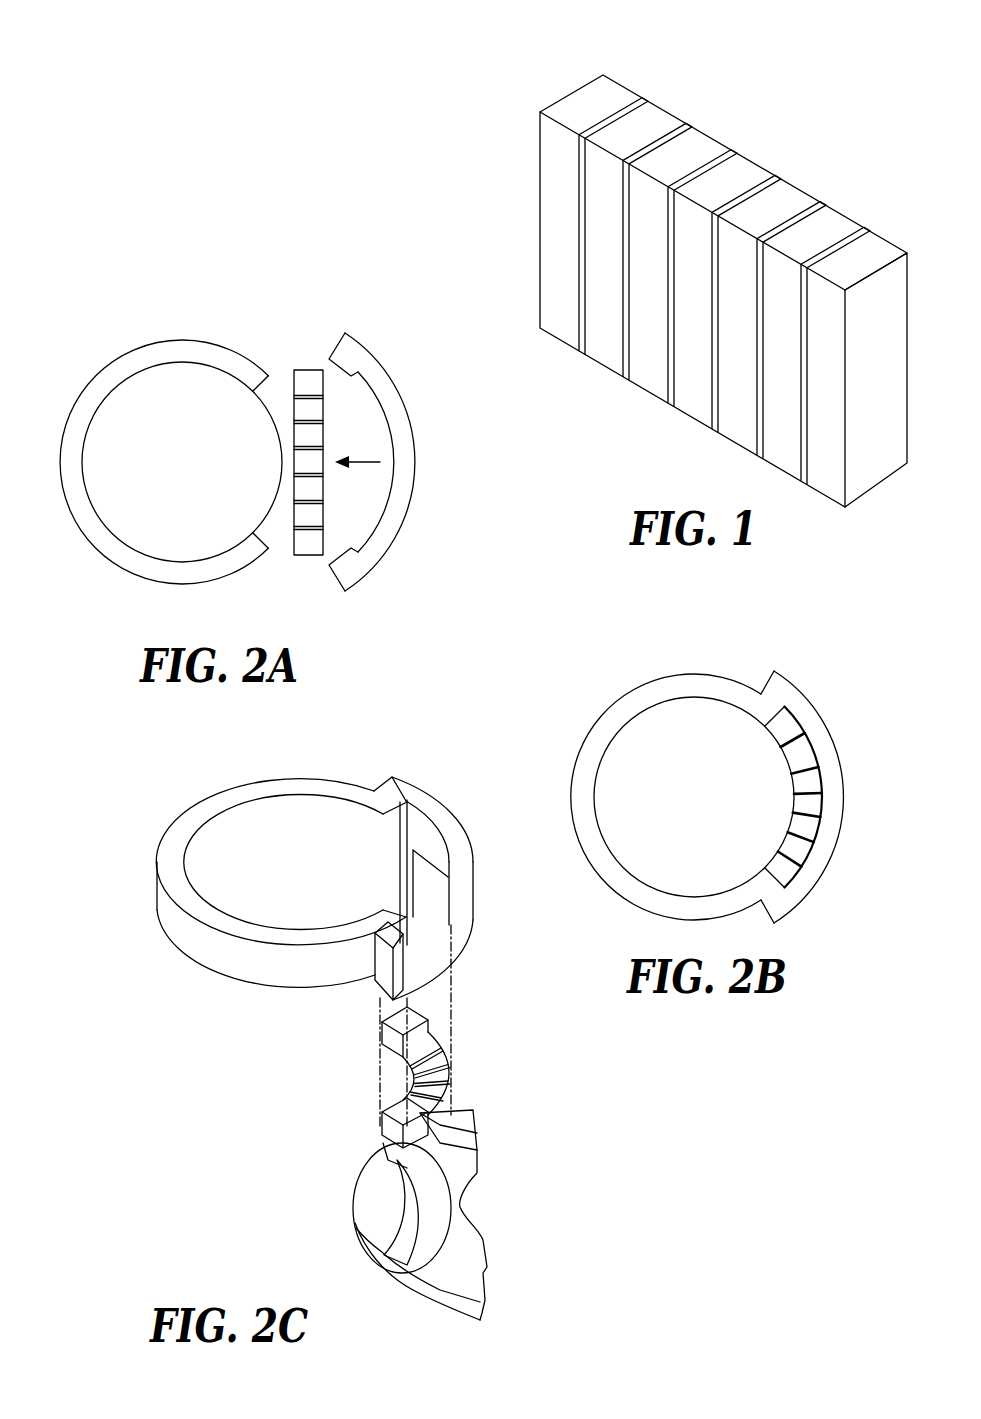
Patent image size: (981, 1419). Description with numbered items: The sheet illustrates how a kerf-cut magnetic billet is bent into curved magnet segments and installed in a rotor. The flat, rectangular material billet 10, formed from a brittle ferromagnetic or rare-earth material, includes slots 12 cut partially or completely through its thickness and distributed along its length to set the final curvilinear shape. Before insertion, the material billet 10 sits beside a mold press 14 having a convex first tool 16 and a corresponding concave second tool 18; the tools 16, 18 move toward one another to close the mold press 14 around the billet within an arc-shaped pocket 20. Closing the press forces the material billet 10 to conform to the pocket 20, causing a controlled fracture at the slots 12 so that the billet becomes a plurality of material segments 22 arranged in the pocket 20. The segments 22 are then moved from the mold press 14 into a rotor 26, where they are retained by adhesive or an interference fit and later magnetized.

In FIG. 1, the material billet 10 is at (516, 106).
In FIG. 2A, the material billet 10 is at (306, 556).
In FIG. 1, the slots 12 is at (703, 163).
In FIG. 2A, the mold press 14 is at (103, 350).
In FIG. 2B, the mold press 14 is at (597, 689).
In FIG. 2C, the mold press 14 is at (156, 808).
In FIG. 2A, the first tool 16 is at (267, 402).
In FIG. 2A, the second tool 18 is at (413, 440).
In FIG. 2B, the pocket 20 is at (810, 866).
In FIG. 2B, the material segments 22 is at (803, 843).
In FIG. 2C, the material segments 22 is at (437, 1097).
In FIG. 2C, the rotor 26 is at (352, 1210).